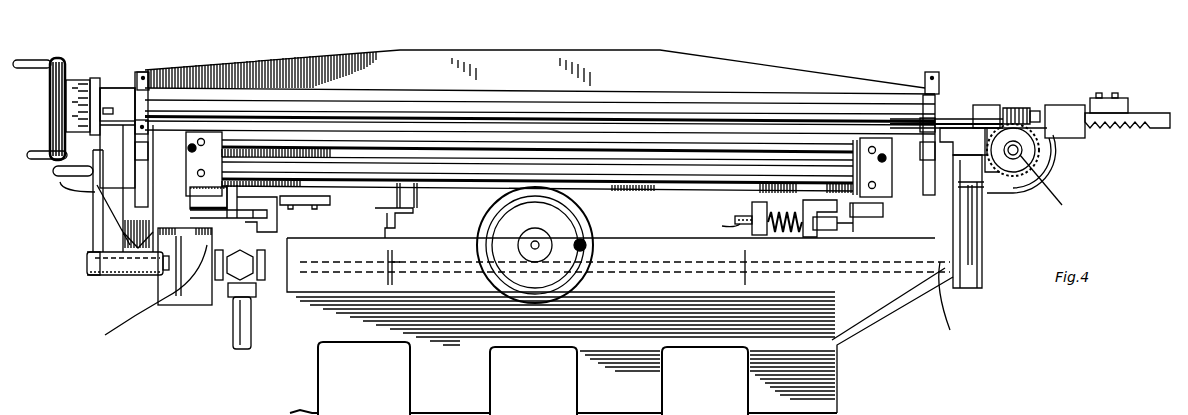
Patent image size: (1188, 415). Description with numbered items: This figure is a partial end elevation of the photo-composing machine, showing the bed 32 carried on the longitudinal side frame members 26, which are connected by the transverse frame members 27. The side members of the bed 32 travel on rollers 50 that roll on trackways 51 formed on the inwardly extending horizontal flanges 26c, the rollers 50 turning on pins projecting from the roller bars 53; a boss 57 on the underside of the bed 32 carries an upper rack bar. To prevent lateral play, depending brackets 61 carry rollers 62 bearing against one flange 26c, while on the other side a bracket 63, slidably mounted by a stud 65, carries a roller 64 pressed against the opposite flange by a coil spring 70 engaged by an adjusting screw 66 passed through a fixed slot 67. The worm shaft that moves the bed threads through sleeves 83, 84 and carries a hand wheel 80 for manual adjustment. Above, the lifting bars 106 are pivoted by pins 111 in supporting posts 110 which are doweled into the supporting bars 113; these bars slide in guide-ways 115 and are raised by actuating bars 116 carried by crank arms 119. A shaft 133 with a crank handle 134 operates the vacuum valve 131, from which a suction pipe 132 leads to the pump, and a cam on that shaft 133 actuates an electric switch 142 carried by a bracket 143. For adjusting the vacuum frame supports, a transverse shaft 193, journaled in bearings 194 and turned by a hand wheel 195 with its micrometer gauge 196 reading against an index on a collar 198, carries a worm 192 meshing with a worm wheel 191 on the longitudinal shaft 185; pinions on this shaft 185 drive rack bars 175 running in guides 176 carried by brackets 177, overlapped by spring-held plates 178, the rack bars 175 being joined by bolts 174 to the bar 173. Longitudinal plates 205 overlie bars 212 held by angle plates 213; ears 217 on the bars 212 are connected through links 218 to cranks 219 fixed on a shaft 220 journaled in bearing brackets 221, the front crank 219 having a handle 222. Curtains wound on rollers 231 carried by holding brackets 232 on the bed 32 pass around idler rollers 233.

The lifting bar 106 is at (307, 68).
The transverse shaft 193 is at (398, 112).
The bed 32 is at (490, 158).
The idler roller 233 is at (618, 141).
The roller 231 is at (735, 173).
The roller bar 53 is at (845, 200).
The stud 65 is at (790, 200).
The supporting bar 113 is at (150, 112).
The supporting post 110 is at (152, 80).
The pin 111 is at (148, 72).
The holding bracket 232 is at (215, 140).
The roller 50 is at (190, 194).
The actuating bar 116 is at (149, 127).
The guide-way 115 is at (925, 160).
The crank arm 119 is at (140, 180).
The hand wheel 195 is at (52, 90).
The micrometer gauge 196 is at (78, 80).
The collar 198 is at (96, 78).
The bearing 194 is at (104, 88).
The longitudinal side frame member 26 is at (110, 210).
The handle 222 is at (60, 176).
The crank handle 134 is at (70, 190).
The crank 219 is at (93, 220).
The shaft 133 is at (87, 262).
The shaft 220 is at (113, 275).
The bearing bracket 221 is at (130, 272).
The horizontal flange 26c is at (156, 290).
The bracket 143 is at (165, 305).
The electric switch 142 is at (172, 308).
The valve 131 is at (252, 282).
The suction pipe 132 is at (251, 340).
The boss 57 is at (220, 222).
The depending bracket 61 is at (282, 206).
The roller 62 is at (284, 216).
The sleeve 84 is at (375, 209).
The sleeve 83 is at (412, 212).
The transverse frame member 27 is at (852, 325).
The hand wheel 80 is at (592, 218).
The adjusting screw 66 is at (735, 216).
The fixed slot 67 is at (719, 223).
The coil spring 70 is at (760, 236).
The bracket 63 is at (810, 237).
The roller 64 is at (838, 232).
The trackway 51 is at (868, 218).
The angle plate 213 is at (973, 152).
The bar 212 is at (963, 140).
The worm 192 is at (1025, 105).
The longitudinal plate 205 is at (960, 128).
The plate 178 is at (1060, 105).
The guide 176 is at (1046, 110).
The rack bar 175 is at (1150, 118).
The bolt 174 is at (1106, 98).
The bar 173 is at (1128, 98).
The bracket 177 is at (1058, 165).
The longitudinal shaft 185 is at (1045, 175).
The worm wheel 191 is at (1052, 186).
The ear 217 is at (978, 183).
The link 218 is at (985, 188).